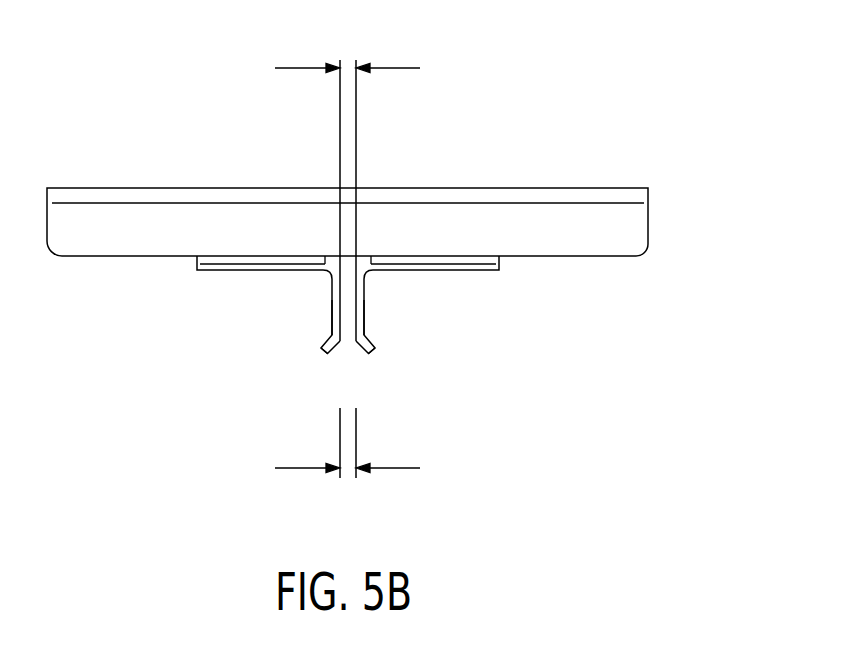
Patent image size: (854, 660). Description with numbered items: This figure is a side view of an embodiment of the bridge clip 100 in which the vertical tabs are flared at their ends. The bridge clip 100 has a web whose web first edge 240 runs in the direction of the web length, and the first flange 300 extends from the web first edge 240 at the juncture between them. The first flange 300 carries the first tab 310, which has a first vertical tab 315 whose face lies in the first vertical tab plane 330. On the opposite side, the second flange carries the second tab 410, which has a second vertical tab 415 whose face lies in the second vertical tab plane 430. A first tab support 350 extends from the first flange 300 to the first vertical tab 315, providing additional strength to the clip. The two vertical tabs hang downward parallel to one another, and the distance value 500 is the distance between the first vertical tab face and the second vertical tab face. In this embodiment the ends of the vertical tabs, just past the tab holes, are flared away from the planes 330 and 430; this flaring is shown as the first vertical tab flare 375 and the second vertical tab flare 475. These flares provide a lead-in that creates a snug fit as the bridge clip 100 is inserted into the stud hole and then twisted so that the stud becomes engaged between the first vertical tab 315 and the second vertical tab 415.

The bridge clip 100 is at (382, 169).
The web first edge 240 is at (648, 188).
The first flange 300 is at (464, 269).
The first tab 310 is at (456, 269).
The first vertical tab 315 is at (380, 333).
The first vertical tab plane 330 is at (370, 92).
The first tab support 350 is at (500, 282).
The first vertical tab flare 375 is at (363, 362).
The second tab 410 is at (255, 269).
The second vertical tab 415 is at (315, 333).
The second vertical tab plane 430 is at (326, 92).
The second vertical tab flare 475 is at (333, 362).
The distance value 500 is at (348, 70).